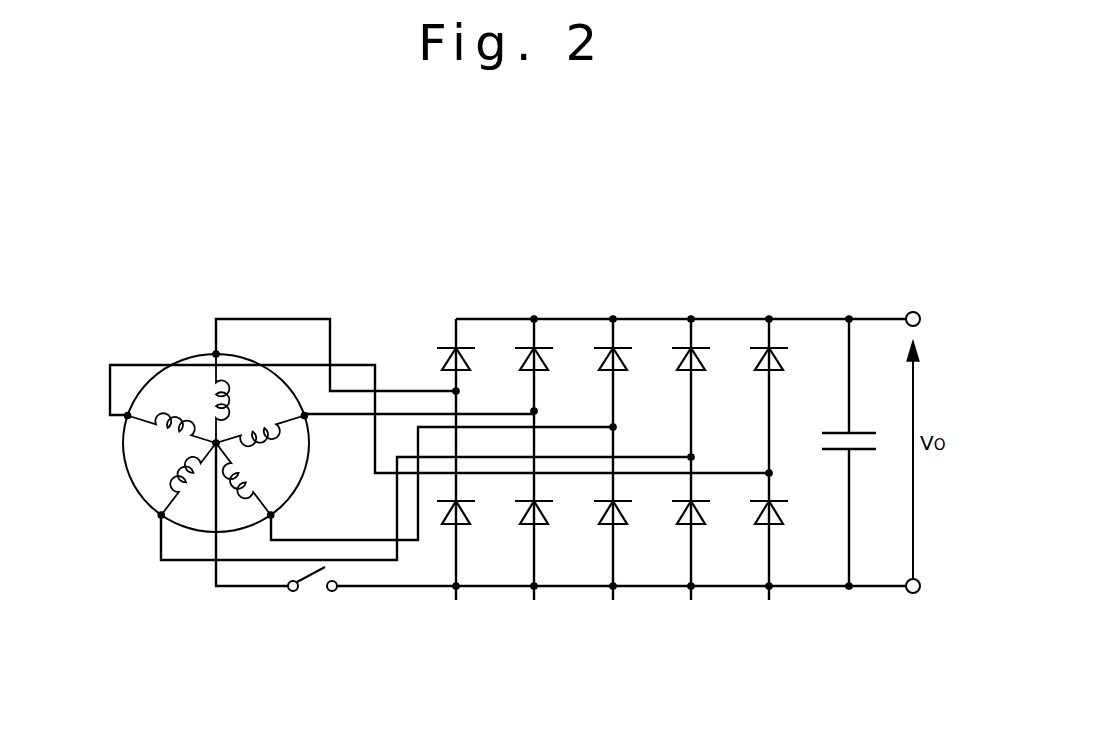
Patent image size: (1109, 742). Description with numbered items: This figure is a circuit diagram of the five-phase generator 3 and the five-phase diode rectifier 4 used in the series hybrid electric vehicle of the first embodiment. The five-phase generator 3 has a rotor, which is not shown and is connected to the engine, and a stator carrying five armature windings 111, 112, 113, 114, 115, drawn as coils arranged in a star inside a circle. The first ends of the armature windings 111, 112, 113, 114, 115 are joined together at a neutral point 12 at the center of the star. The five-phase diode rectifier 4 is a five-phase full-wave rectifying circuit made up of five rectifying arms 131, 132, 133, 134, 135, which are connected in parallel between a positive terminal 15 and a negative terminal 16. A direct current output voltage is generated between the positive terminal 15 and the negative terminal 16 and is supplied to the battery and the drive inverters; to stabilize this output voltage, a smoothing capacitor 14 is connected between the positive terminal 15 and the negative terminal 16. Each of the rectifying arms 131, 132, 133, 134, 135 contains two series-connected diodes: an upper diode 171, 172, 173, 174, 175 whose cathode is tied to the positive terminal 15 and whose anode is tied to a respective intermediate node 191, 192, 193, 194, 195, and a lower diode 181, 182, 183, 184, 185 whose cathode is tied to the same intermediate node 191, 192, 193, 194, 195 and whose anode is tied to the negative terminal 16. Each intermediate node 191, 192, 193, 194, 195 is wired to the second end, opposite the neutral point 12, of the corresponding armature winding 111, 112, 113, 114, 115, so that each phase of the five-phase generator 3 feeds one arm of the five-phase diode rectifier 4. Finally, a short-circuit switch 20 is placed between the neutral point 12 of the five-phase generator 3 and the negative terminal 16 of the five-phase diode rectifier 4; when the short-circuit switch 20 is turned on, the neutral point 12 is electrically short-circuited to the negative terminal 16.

The five-phase generator 3 is at (170, 344).
The five-phase diode rectifier 4 is at (592, 271).
The neutral point 12 is at (214, 443).
The smoothing capacitor 14 is at (858, 432).
The positive terminal 15 is at (916, 311).
The negative terminal 16 is at (917, 594).
The short-circuit switch 20 is at (305, 590).
The armature winding 111 is at (226, 422).
The armature winding 112 is at (265, 440).
The armature winding 113 is at (236, 470).
The armature winding 114 is at (172, 481).
The armature winding 115 is at (174, 412).
The rectifying arm 131 is at (462, 599).
The rectifying arm 132 is at (540, 599).
The rectifying arm 133 is at (618, 599).
The rectifying arm 134 is at (682, 599).
The rectifying arm 135 is at (760, 599).
The diode 171 is at (440, 347).
The diode 172 is at (518, 347).
The diode 173 is at (597, 347).
The diode 174 is at (675, 347).
The diode 175 is at (753, 347).
The diode 181 is at (463, 526).
The diode 182 is at (541, 526).
The diode 183 is at (620, 526).
The diode 184 is at (698, 526).
The diode 185 is at (776, 526).
The intermediate node 191 is at (459, 391).
The intermediate node 192 is at (537, 410).
The intermediate node 193 is at (615, 426).
The intermediate node 194 is at (693, 456).
The intermediate node 195 is at (772, 475).